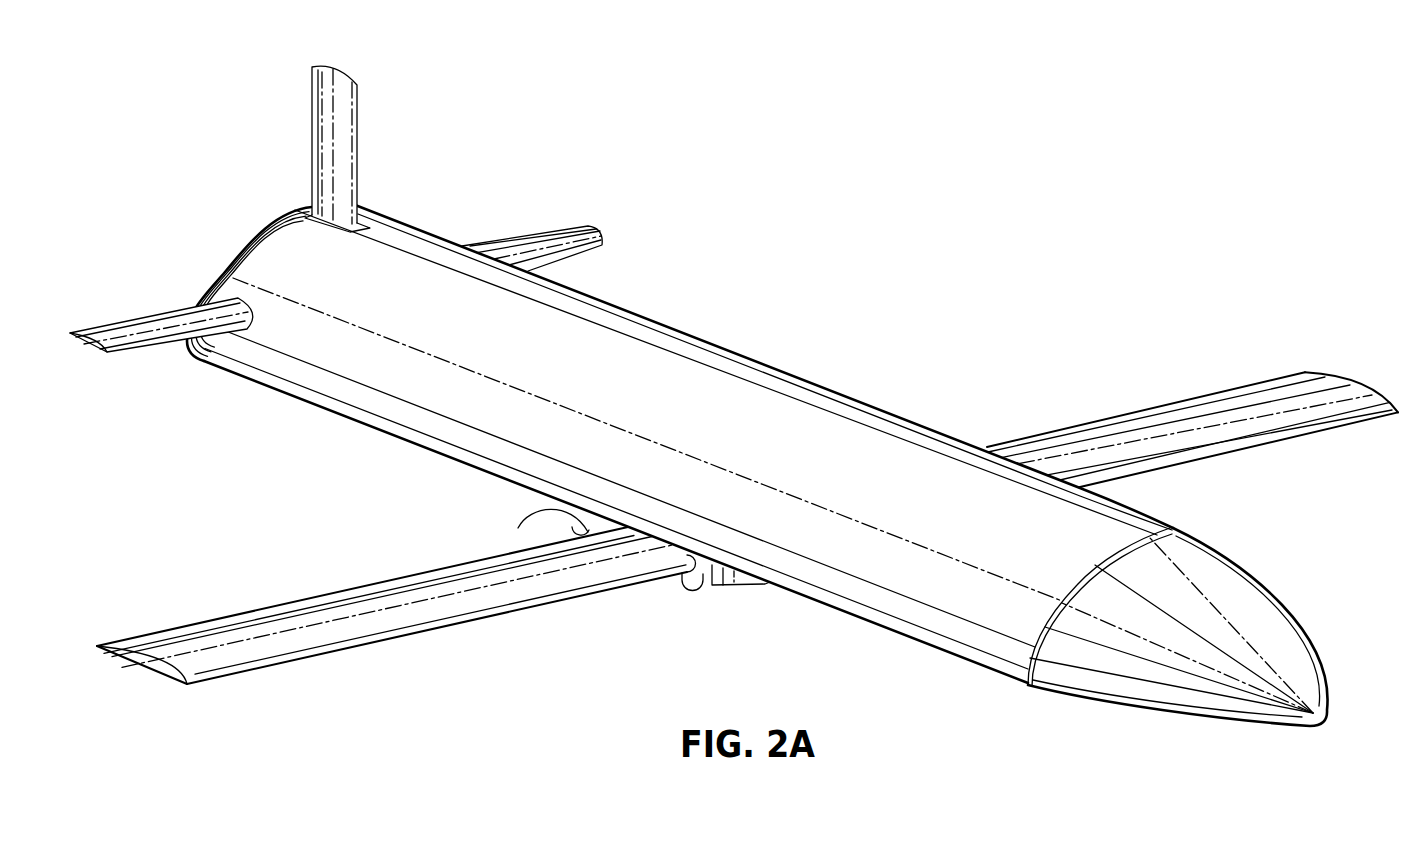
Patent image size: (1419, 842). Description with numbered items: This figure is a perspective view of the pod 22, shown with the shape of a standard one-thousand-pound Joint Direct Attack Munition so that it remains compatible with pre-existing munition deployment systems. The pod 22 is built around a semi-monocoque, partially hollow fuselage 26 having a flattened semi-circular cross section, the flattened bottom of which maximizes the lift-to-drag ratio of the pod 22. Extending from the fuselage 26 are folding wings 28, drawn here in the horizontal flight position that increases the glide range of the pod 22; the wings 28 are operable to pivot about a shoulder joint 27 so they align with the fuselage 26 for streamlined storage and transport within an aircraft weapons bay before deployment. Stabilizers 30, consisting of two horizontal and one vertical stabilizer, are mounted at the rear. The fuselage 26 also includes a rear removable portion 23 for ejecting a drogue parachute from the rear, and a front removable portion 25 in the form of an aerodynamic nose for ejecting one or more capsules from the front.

The pod 22 is at (746, 445).
The rear removable portion 23 is at (227, 250).
The front removable portion 25 is at (1252, 627).
The fuselage 26 is at (697, 360).
The shoulder joint 27 is at (567, 514).
The wings 28 is at (287, 617).
The stabilizers 30 is at (318, 148).